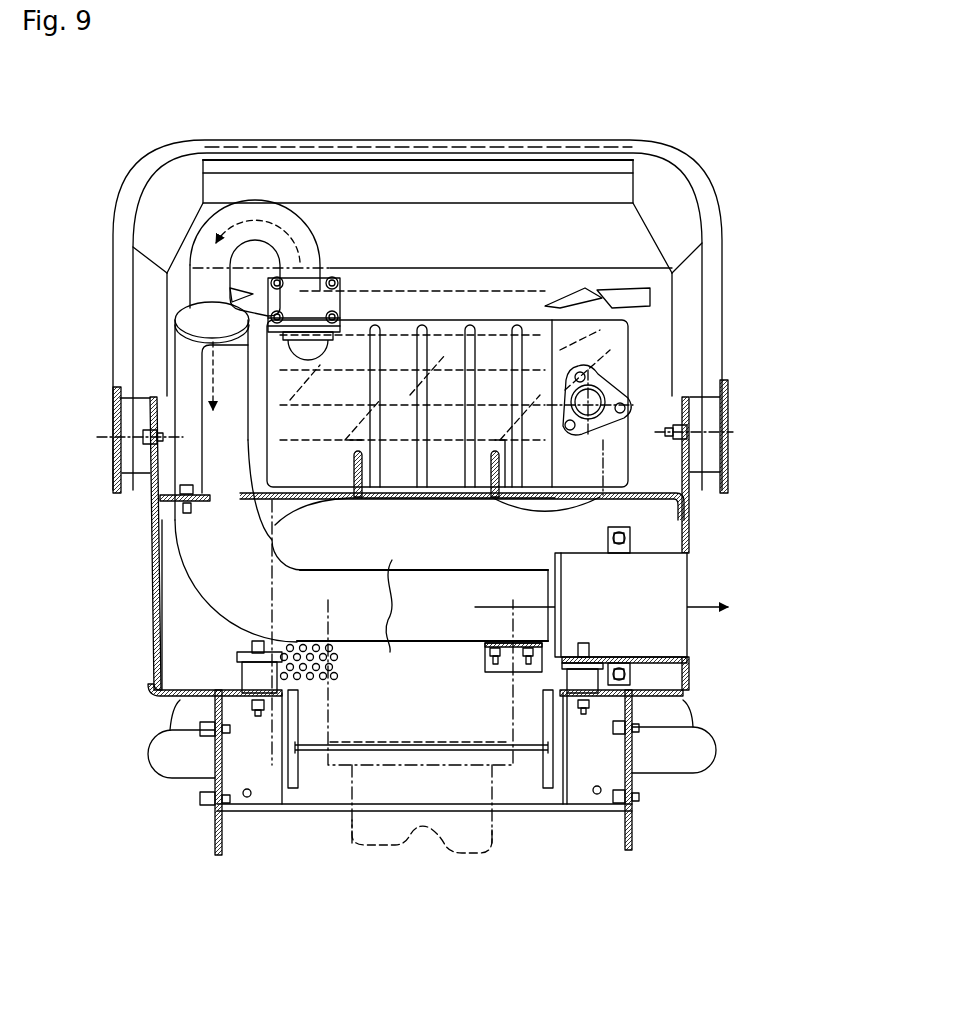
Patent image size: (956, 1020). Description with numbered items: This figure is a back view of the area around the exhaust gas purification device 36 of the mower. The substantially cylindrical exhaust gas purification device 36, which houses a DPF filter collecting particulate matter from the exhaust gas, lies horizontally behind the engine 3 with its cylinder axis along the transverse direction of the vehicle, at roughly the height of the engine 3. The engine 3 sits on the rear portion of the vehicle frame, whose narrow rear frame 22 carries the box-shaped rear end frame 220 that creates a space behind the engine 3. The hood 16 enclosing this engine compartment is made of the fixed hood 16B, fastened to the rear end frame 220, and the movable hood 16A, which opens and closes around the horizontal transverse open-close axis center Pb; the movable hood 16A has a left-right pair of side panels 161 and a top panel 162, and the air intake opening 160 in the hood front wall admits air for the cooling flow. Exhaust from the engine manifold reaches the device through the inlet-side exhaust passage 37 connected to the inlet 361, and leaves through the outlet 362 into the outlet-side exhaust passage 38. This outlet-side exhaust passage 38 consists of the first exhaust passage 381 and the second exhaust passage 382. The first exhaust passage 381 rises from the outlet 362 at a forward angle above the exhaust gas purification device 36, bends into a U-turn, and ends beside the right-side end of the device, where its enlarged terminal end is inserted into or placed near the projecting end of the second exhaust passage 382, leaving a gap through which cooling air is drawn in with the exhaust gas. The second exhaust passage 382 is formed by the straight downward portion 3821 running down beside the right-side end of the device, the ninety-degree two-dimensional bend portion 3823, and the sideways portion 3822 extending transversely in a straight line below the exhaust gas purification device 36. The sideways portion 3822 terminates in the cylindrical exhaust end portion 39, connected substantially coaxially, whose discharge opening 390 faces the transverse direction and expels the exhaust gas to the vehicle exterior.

The hood 16 is at (417, 273).
The movable hood 16A is at (556, 140).
The fixed hood 16B is at (598, 148).
The side panels 161 is at (114, 248).
The top panel 162 is at (400, 140).
The air intake opening 160 is at (602, 297).
The open-close axis center Pb is at (104, 432).
The rear end frame 220 is at (683, 543).
The outlet-side exhaust passage 38 is at (412, 482).
The first exhaust passage 381 is at (292, 240).
The downward portion 3821 is at (233, 442).
The second exhaust passage 382 is at (412, 602).
The sideways portion 3822 is at (420, 570).
The bend portion 3823 is at (202, 563).
The exhaust gas purification device 36 is at (464, 366).
The outlet 362 is at (310, 345).
The inlet 361 is at (590, 410).
The inlet-side exhaust passage 37 is at (602, 428).
The discharge opening 390 is at (680, 583).
The exhaust end portion 39 is at (660, 668).
The rear frame 22 is at (213, 840).
The diesel engine 3 is at (500, 830).